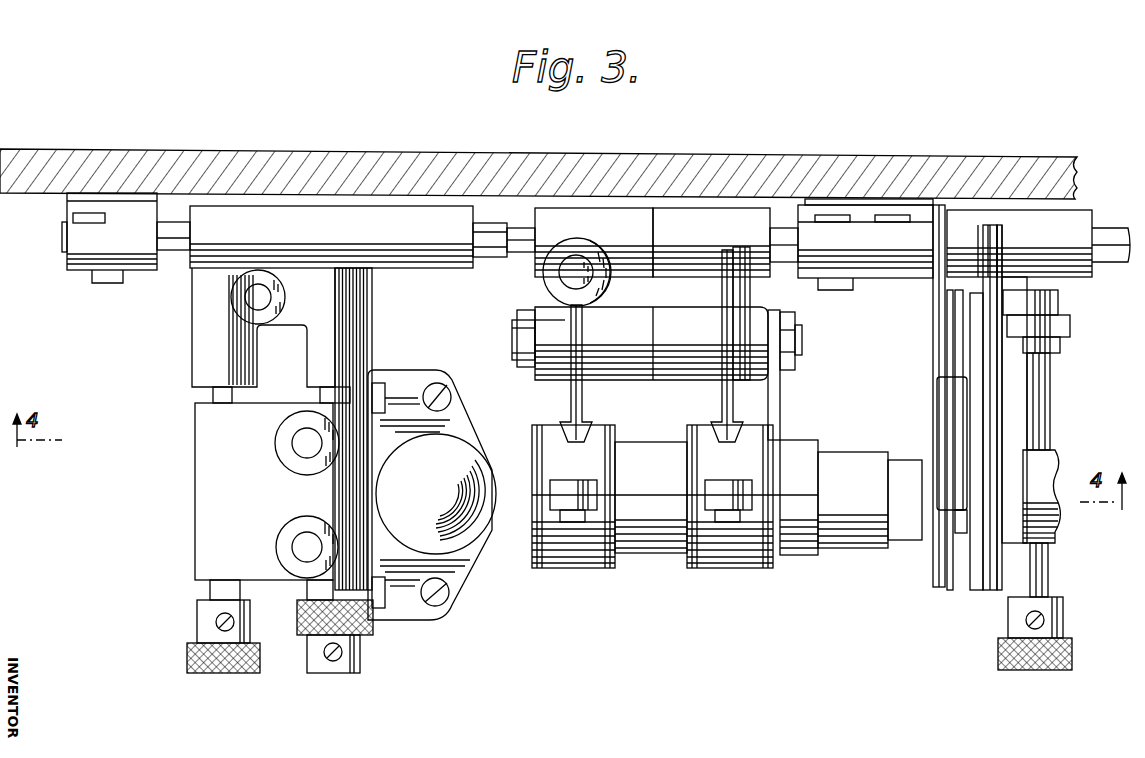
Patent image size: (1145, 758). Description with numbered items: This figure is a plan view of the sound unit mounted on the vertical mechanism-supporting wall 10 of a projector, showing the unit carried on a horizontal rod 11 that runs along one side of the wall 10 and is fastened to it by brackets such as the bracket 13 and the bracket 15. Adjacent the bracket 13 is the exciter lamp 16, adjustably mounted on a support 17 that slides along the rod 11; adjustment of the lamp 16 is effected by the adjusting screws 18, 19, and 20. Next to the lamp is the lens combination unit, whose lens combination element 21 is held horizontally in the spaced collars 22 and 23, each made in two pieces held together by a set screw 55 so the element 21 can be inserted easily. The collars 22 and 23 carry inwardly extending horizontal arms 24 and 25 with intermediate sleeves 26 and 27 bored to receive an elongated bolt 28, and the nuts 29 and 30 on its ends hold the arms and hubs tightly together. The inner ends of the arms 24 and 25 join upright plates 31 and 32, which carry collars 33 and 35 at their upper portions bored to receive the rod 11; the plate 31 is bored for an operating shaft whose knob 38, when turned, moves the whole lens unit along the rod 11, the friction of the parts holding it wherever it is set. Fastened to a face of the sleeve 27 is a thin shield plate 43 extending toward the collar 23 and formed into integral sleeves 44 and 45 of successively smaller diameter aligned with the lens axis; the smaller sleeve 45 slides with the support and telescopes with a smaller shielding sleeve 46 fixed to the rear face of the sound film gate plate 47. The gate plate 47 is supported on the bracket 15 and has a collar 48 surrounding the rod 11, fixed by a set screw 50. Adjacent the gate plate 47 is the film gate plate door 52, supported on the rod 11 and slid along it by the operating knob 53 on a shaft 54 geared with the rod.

The mechanism-supporting wall 10 is at (471, 160).
The bracket 15 is at (912, 163).
The bracket 13 is at (75, 201).
The rod 11 is at (172, 262).
The support 17 is at (362, 237).
The operating knob 38 is at (570, 251).
The collar 33 is at (594, 242).
The collar 35 is at (725, 242).
The collar 48 is at (865, 241).
The upright plate 31 is at (553, 286).
The nut 30 is at (518, 320).
The sleeve 26 is at (626, 318).
The sleeve 27 is at (683, 322).
The upright plate 32 is at (735, 298).
The nut 29 is at (798, 318).
The elongated bolt 28 is at (803, 342).
The set screw 50 is at (840, 290).
The horizontal arm 24 is at (586, 396).
The horizontal arm 25 is at (716, 392).
The shield plate 43 is at (780, 402).
The sound film gate plate 47 is at (930, 376).
The lens combination element 21 is at (654, 446).
The sleeve 44 is at (803, 442).
The sleeve 45 is at (848, 454).
The shielding sleeve 46 is at (905, 468).
The film gate plate door 52 is at (988, 428).
The set screw 55 is at (578, 490).
The exciter lamp 16 is at (432, 495).
The adjusting screw 20 is at (302, 546).
The collar 22 is at (570, 568).
The collar 23 is at (730, 568).
The shaft 54 is at (1035, 575).
The operating knob 53 is at (1065, 631).
The adjusting screw 18 is at (208, 620).
The adjusting screw 19 is at (345, 646).